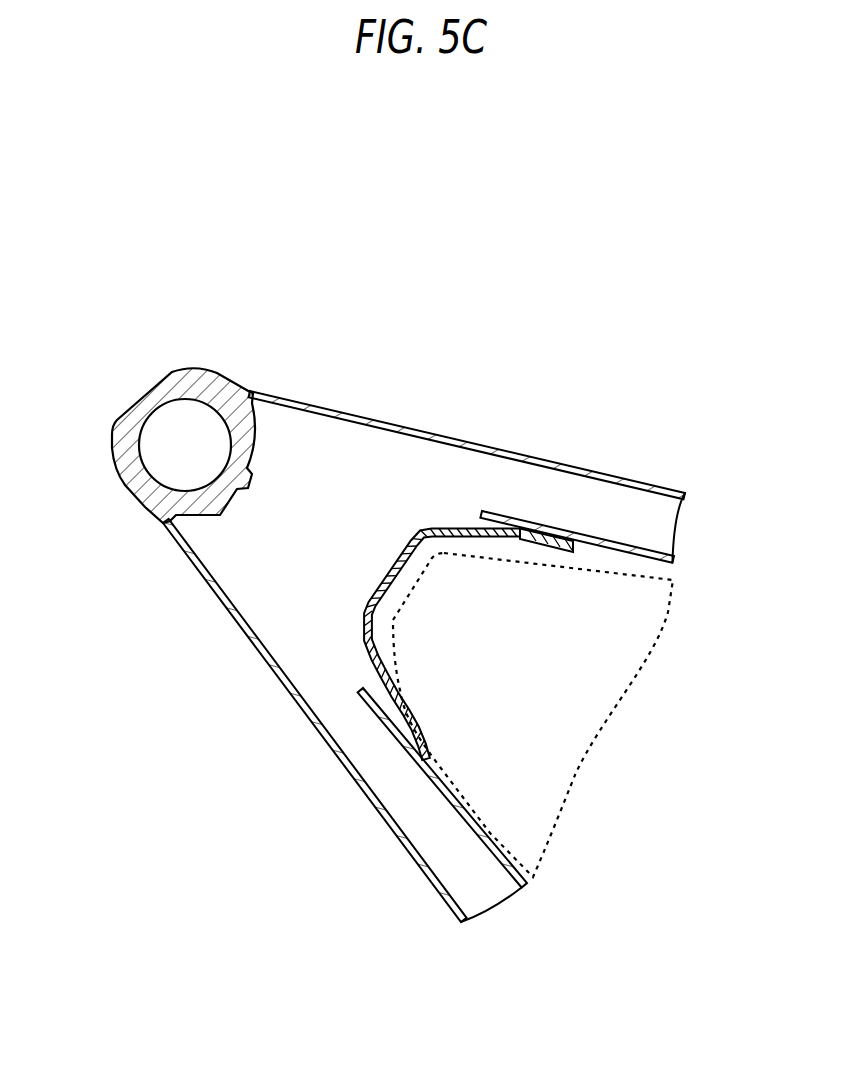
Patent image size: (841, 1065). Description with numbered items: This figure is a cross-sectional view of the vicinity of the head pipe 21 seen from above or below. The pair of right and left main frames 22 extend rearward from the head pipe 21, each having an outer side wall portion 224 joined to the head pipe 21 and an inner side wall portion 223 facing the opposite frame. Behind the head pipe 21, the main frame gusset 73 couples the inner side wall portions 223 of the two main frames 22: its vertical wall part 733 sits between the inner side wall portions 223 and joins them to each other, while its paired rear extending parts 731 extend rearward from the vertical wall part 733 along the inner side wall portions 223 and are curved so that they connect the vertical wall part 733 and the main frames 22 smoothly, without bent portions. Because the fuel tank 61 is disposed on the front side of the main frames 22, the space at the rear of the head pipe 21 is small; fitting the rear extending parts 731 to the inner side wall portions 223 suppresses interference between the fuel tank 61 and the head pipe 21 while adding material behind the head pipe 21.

The head pipe 21 is at (215, 370).
The main frames 22 is at (447, 648).
The outer side wall portions 224 is at (570, 467).
The inner side wall portions 223 is at (623, 553).
The fuel tank 61 is at (677, 542).
The main frame gusset 73 is at (448, 618).
The vertical wall part 733 is at (393, 572).
The rear extending parts 731 is at (520, 540).